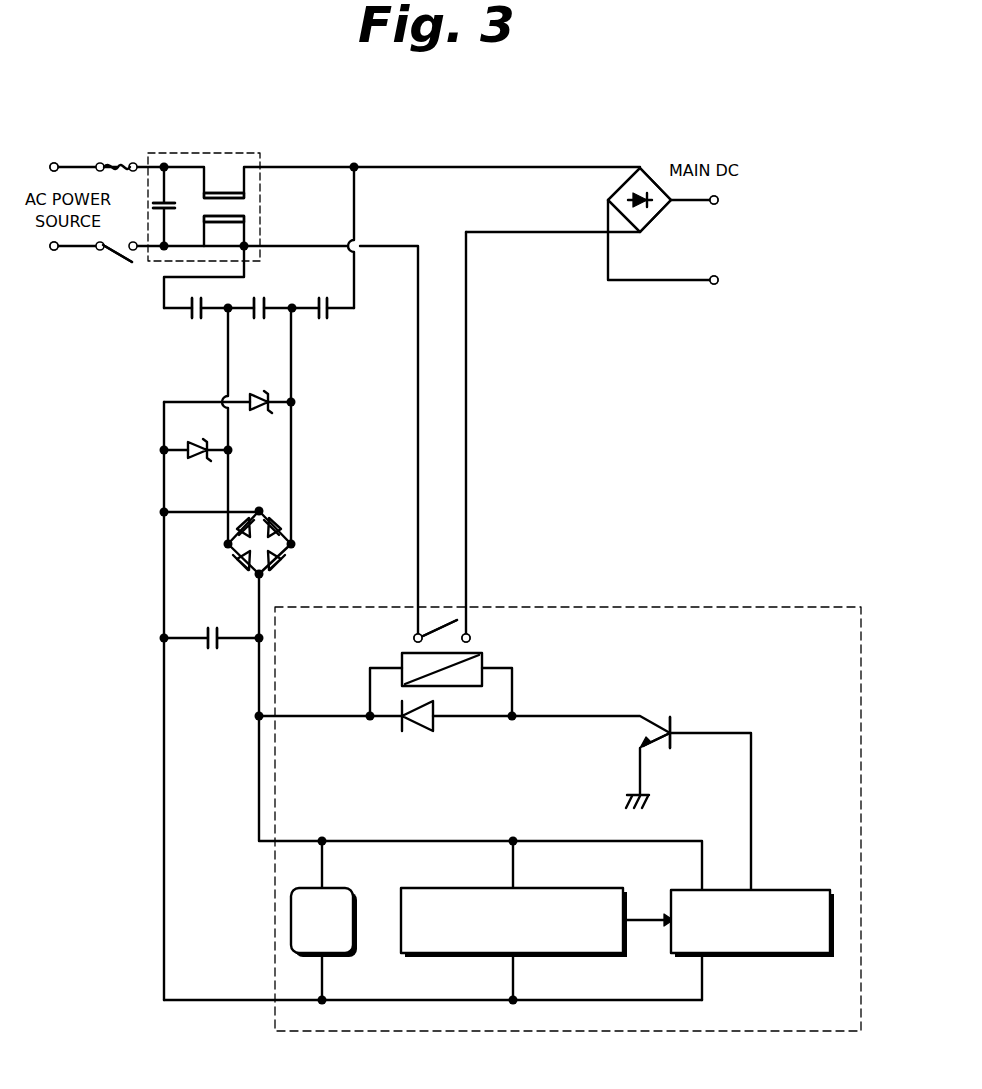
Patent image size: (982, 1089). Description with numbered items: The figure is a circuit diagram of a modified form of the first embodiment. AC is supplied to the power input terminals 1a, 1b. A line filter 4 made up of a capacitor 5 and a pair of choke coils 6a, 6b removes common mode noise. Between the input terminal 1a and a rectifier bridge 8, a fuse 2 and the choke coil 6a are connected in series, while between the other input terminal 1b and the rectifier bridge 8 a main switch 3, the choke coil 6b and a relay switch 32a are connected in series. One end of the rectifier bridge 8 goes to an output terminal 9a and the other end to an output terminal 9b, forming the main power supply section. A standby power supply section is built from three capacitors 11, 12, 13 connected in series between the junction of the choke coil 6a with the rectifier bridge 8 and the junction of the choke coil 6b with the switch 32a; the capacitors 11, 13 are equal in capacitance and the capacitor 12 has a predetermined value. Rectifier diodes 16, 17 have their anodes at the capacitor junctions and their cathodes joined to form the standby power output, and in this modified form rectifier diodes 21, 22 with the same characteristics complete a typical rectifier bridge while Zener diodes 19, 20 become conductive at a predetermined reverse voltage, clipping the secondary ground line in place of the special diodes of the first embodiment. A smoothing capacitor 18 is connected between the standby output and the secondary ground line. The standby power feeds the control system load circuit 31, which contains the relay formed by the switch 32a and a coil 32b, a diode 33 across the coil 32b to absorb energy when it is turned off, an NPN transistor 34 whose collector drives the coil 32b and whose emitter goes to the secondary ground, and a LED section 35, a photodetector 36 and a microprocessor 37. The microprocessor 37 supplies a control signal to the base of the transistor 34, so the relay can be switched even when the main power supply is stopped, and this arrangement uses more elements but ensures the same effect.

The power input terminal 1a is at (54, 162).
The power input terminal 1b is at (54, 252).
The fuse 2 is at (116, 162).
The main switch 3 is at (116, 265).
The line filter 4 is at (250, 152).
The capacitor 5 is at (177, 206).
The choke coil 6a is at (237, 192).
The choke coil 6b is at (246, 226).
The rectifier bridge 8 is at (642, 165).
The output terminal 9a is at (718, 200).
The output terminal 9b is at (718, 280).
The capacitor 11 is at (196, 320).
The capacitor 12 is at (258, 320).
The capacitor 13 is at (321, 320).
The rectifier diode 16 is at (296, 560).
The rectifier diode 17 is at (237, 567).
The smoothing capacitor 18 is at (211, 650).
The Zener diode 19 is at (260, 413).
The Zener diode 20 is at (198, 461).
The rectifier diode 21 is at (296, 526).
The rectifier diode 22 is at (233, 526).
The control system circuit 31 is at (645, 606).
The switch 32a is at (443, 622).
The coil 32b is at (483, 656).
The diode 33 is at (433, 733).
The NPN transistor 34 is at (638, 733).
The LED section 35 is at (337, 888).
The photodetector 36 is at (560, 888).
The microprocessor 37 is at (795, 889).